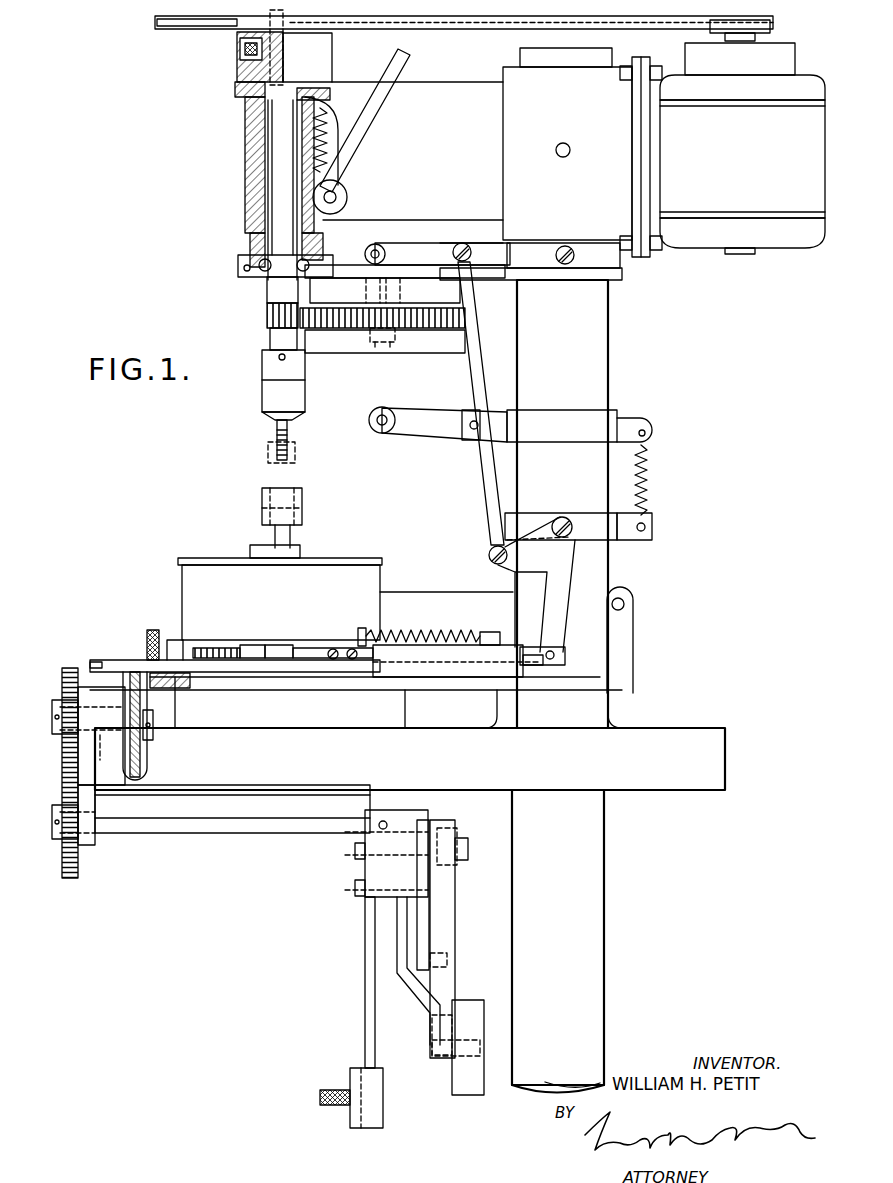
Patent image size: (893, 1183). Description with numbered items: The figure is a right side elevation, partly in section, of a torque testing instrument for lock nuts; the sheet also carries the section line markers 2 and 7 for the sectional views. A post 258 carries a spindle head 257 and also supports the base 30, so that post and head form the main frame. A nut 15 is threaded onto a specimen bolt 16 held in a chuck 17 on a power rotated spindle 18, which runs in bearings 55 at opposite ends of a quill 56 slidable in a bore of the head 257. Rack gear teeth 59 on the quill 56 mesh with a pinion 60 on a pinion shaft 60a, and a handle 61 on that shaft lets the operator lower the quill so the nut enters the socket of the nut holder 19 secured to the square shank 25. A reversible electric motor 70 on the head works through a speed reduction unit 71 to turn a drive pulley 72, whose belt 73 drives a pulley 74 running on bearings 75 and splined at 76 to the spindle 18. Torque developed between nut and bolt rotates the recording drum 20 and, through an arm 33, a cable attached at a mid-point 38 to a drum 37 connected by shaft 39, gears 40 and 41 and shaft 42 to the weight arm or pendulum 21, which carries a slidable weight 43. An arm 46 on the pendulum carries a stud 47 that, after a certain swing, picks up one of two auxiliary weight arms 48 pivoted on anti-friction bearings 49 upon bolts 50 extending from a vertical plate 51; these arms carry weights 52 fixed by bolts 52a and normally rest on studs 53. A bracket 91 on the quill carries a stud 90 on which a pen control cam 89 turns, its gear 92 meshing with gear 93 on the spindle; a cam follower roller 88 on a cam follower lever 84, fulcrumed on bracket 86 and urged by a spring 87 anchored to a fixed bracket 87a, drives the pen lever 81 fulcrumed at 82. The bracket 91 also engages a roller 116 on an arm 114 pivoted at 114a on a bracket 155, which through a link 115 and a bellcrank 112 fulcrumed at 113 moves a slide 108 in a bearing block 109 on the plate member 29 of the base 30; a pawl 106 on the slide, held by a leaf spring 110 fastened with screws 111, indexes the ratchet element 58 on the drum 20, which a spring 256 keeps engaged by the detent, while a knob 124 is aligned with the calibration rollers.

The belt 73 is at (514, 29).
The pulley 74 is at (215, 28).
The drive pulley 72 is at (770, 29).
The speed reduction unit 71 is at (742, 71).
The reversible electric motor 70 is at (735, 159).
The spindle head 257 is at (425, 151).
The spline 76 is at (284, 52).
The bearings 75 is at (242, 50).
The bearings 55 is at (246, 90).
The quill 56 is at (245, 200).
The pinion 60 is at (307, 206).
The rack gear teeth 59 is at (323, 134).
The pinion shaft 60a is at (348, 195).
The handle 61 is at (380, 119).
The roller 116 is at (377, 245).
The bracket 91 is at (352, 266).
The arm 114 is at (470, 247).
The pivot 114a is at (570, 247).
The bracket 155 is at (620, 270).
The spindle 18 is at (275, 277).
The gear 93 is at (267, 318).
The gear 92 is at (447, 336).
The pen control cam 89 is at (354, 355).
The stud 90 is at (384, 346).
The post 258 is at (598, 328).
The holder or chuck 17 is at (262, 393).
The specimen bolt 16 is at (290, 441).
The nut 15 is at (266, 457).
The nut holder 19 is at (262, 512).
The square shank 25 is at (276, 537).
The recording drum 20 is at (176, 573).
The cam follower roller 88 is at (382, 408).
The cam follower lever 84 is at (445, 406).
The bracket 86 is at (612, 413).
The spring 87 is at (648, 477).
The fixed bracket 87a is at (652, 527).
The fulcrum 113 is at (572, 526).
The link 115 is at (488, 494).
The bellcrank 112 is at (556, 628).
The fulcrum 82 is at (626, 604).
The lever 81 is at (443, 603).
The knob 124 is at (153, 630).
The arm 33 is at (122, 660).
The spring 256 is at (198, 680).
The ratchet element 58 is at (236, 660).
The pawl 106 is at (280, 659).
The leaf spring 110 is at (325, 660).
The screws 111 is at (350, 661).
The slide 108 is at (373, 665).
The bearing block 109 is at (482, 668).
The plate member 29 is at (447, 694).
The base 30 is at (656, 729).
The drum 37 is at (142, 749).
The mid-point 38 is at (150, 777).
The shaft 39 is at (100, 748).
The gear 40 is at (62, 752).
The gear 41 is at (62, 793).
The shaft 42 is at (172, 833).
The weight arm or pendulum 21 is at (360, 1017).
The arm 46 is at (397, 968).
The vertical plate 51 is at (430, 914).
The anti-friction bearings 49 is at (455, 833).
The bolts 50 is at (468, 848).
The auxiliary weight arms 48 is at (447, 978).
The studs 53 is at (447, 957).
The stud 47 is at (425, 1040).
The bolts 52a is at (438, 1060).
The weights 52 is at (455, 1086).
The weight 43 is at (352, 1125).
The section line 2- 2 is at (114, 590).
The section line 7- 7 is at (284, 474).